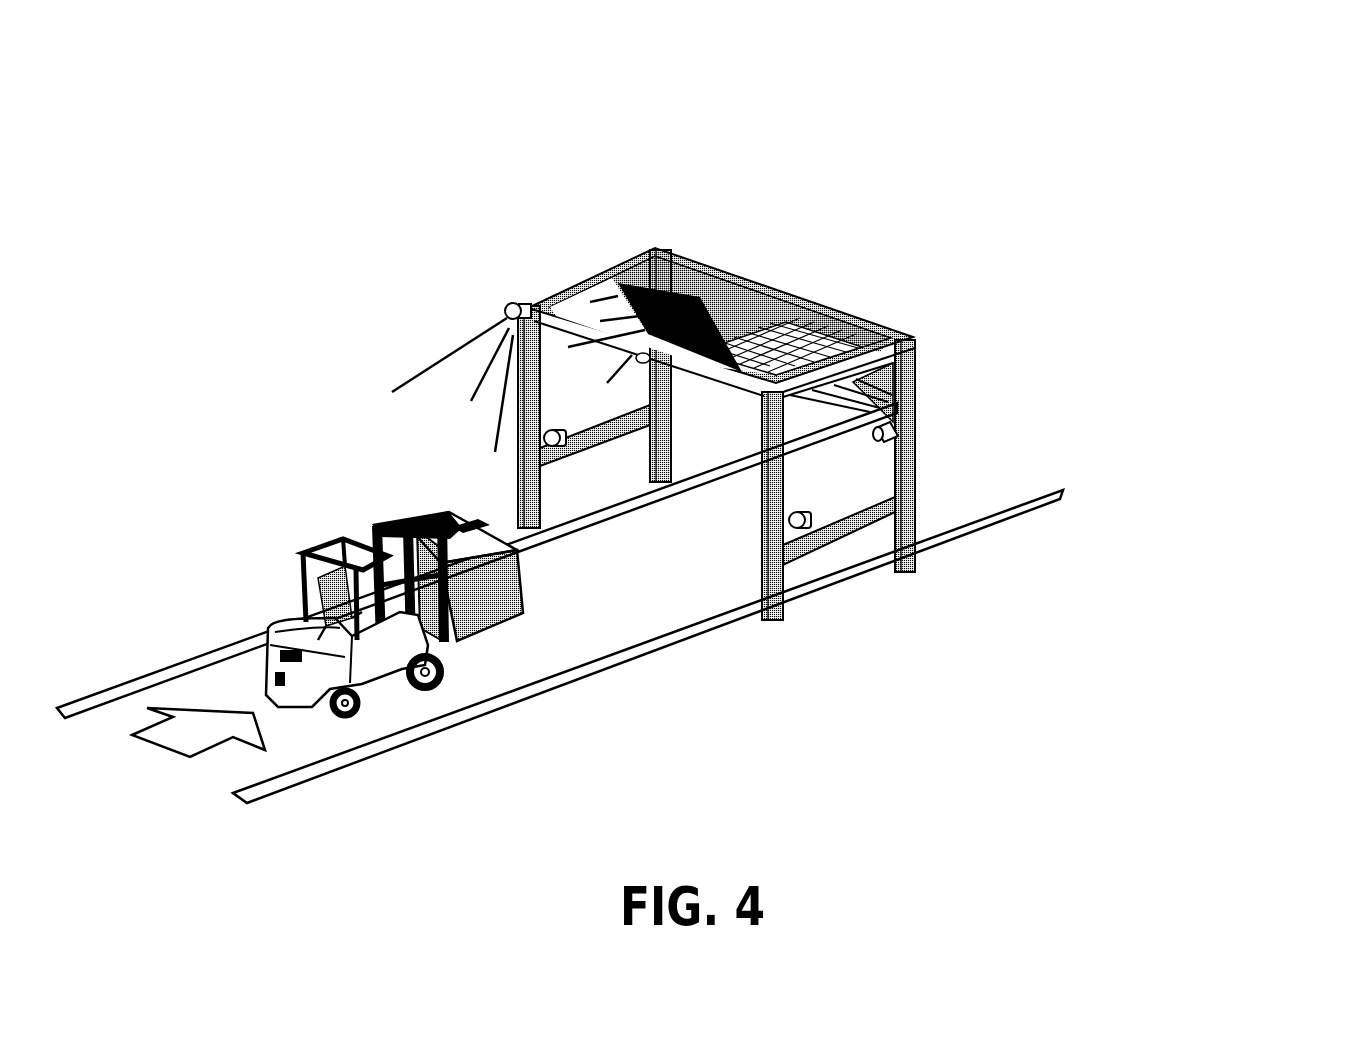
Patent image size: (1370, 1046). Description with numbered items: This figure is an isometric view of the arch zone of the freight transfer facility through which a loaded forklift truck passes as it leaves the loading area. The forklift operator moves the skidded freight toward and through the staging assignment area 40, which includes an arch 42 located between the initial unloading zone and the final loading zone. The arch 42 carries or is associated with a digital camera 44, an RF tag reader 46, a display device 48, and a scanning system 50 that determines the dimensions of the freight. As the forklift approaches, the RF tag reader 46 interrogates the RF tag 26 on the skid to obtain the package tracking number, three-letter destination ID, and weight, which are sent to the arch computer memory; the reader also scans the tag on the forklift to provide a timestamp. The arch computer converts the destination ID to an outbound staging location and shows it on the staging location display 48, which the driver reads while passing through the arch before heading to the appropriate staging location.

The RF tag 26 is at (519, 543).
The staging assignment area 40 is at (848, 280).
The arch 42 is at (913, 413).
The digital camera 44 is at (930, 460).
The RF tag reader 46 is at (395, 258).
The display device 48 is at (727, 326).
The scanning system 50 is at (580, 453).